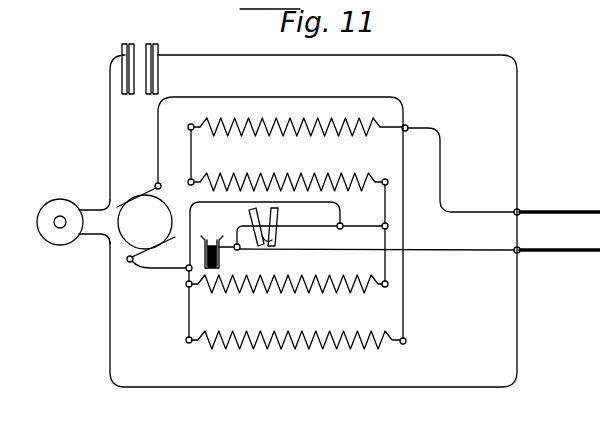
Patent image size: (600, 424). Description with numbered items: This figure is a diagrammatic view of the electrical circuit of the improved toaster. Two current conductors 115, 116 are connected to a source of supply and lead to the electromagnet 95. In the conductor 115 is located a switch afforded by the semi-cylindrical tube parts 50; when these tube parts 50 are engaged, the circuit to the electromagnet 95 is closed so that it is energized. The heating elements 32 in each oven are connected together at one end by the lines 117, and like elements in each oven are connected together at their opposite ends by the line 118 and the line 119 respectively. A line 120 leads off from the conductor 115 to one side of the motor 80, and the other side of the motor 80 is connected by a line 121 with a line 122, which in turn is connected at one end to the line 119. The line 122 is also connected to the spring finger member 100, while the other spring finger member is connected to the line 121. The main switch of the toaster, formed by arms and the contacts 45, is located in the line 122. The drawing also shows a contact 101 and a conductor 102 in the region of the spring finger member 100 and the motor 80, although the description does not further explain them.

The semi-cylindrical tube parts 50 is at (122, 50).
The current conductor 115 is at (575, 212).
The current conductor 116 is at (575, 254).
The line 120 is at (394, 97).
The lines 117 is at (191, 156).
The heating elements 32 is at (298, 176).
The line 118 is at (403, 157).
The line 119 is at (384, 200).
The spring finger member 100 is at (206, 232).
The contact 101 is at (216, 254).
The conductor 102 is at (189, 264).
The line 121 is at (334, 202).
The line 122 is at (356, 226).
The contacts 45 is at (275, 240).
The electromagnet 95 is at (59, 249).
The motor 80 is at (146, 222).